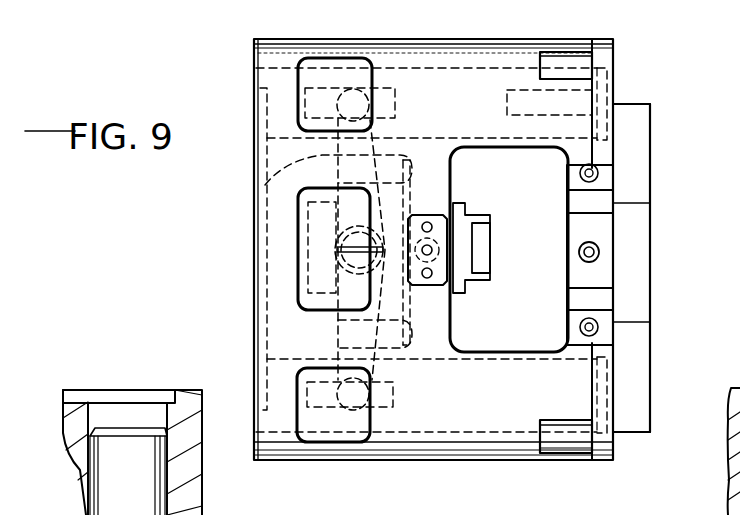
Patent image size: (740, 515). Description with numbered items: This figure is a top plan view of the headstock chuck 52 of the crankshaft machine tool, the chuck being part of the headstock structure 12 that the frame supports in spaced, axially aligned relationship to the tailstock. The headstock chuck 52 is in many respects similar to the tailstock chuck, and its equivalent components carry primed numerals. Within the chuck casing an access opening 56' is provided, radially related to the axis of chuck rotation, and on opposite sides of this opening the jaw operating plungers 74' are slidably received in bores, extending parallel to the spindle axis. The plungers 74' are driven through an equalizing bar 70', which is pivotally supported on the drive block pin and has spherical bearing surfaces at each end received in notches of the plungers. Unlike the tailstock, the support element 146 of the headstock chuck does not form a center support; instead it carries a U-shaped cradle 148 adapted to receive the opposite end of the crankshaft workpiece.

The headstock structure 12 is at (452, 30).
The headstock chuck 52 is at (485, 460).
The jaw operating plunger 74' is at (494, 251).
The equalizing bar 70' is at (304, 249).
The access opening 56' is at (509, 249).
The support element 146 is at (452, 296).
The U-shaped cradle 148 is at (482, 246).